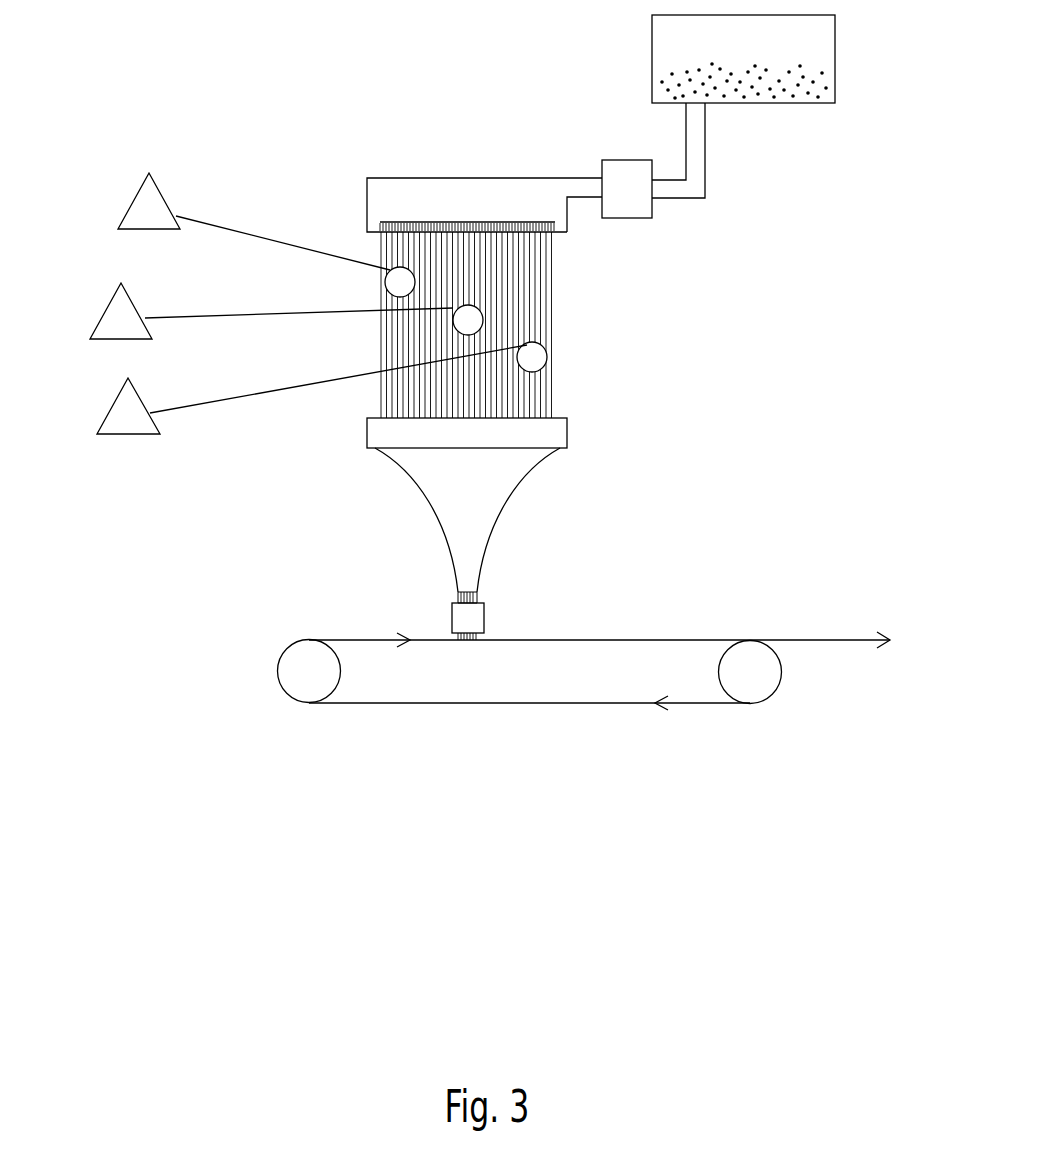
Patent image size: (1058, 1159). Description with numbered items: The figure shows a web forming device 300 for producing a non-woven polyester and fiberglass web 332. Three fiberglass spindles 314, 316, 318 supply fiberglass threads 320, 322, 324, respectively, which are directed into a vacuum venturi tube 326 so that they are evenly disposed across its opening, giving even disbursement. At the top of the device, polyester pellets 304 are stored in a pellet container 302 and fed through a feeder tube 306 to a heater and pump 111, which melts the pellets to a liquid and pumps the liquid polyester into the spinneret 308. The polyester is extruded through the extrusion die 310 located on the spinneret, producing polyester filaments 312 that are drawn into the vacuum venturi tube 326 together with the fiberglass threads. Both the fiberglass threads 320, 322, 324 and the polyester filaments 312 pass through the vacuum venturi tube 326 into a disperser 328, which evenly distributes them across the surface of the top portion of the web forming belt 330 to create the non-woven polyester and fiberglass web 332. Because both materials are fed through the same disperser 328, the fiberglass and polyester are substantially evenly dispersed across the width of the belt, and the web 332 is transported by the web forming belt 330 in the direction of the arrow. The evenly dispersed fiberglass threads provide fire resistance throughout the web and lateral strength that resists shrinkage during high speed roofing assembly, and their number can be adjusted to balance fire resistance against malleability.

The web forming device 300 is at (485, 449).
The pellet container 302 is at (652, 43).
The polyester pellets 304 is at (787, 78).
The feeder tube 306 is at (707, 143).
The heater and pump 111 is at (618, 174).
The spinneret 308 is at (404, 192).
The extrusion die 310 is at (567, 233).
The polyester filaments 312 is at (565, 282).
The fiberglass spindle 314 is at (148, 200).
The fiberglass spindle 316 is at (110, 322).
The fiberglass spindle 318 is at (130, 422).
The fiberglass thread 320 is at (250, 230).
The fiberglass thread 322 is at (229, 314).
The fiberglass thread 324 is at (249, 395).
The vacuum venturi tube 326 is at (497, 485).
The disperser 328 is at (468, 613).
The web forming belt 330 is at (530, 704).
The non-woven polyester and fiberglass web 332 is at (810, 559).